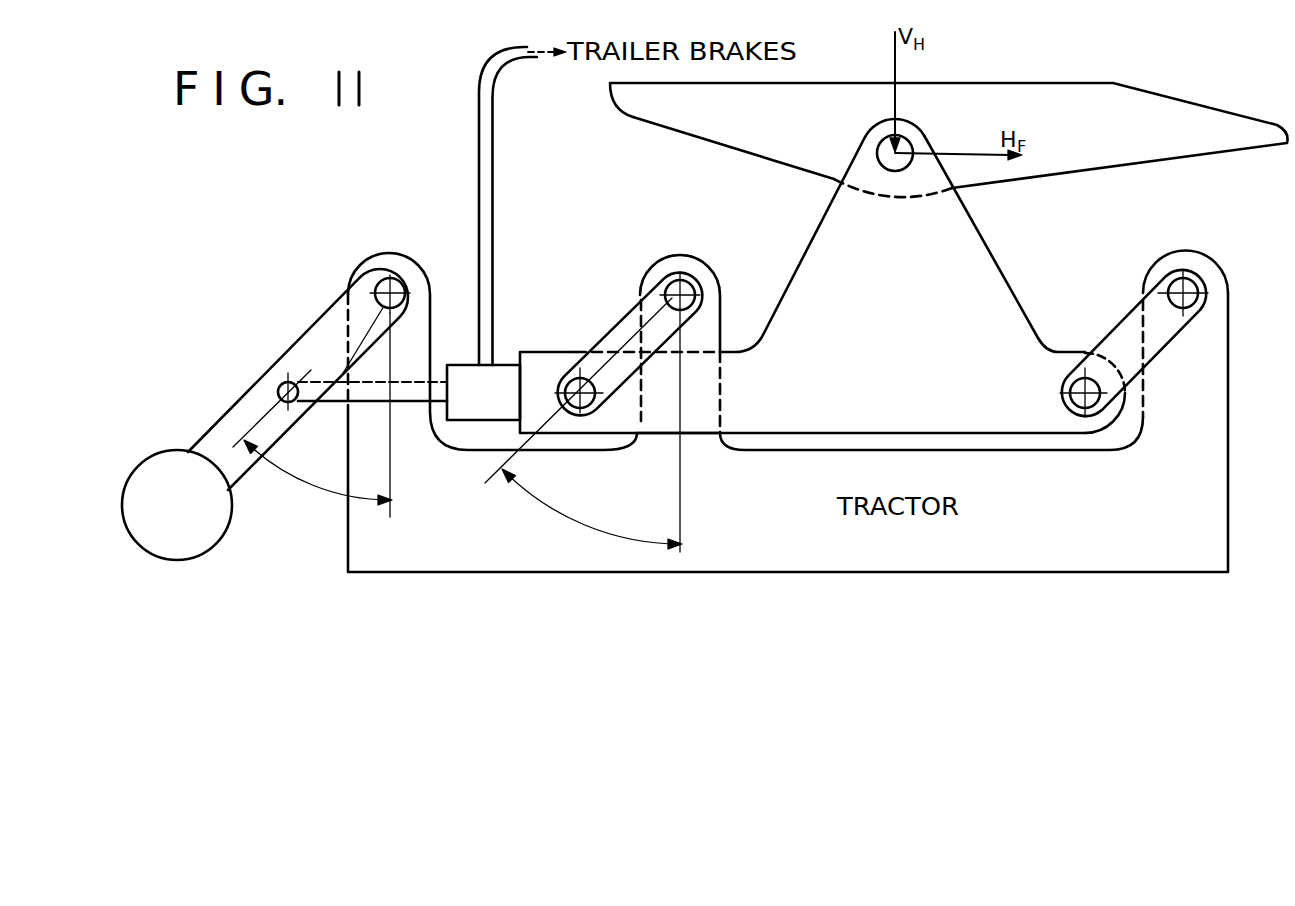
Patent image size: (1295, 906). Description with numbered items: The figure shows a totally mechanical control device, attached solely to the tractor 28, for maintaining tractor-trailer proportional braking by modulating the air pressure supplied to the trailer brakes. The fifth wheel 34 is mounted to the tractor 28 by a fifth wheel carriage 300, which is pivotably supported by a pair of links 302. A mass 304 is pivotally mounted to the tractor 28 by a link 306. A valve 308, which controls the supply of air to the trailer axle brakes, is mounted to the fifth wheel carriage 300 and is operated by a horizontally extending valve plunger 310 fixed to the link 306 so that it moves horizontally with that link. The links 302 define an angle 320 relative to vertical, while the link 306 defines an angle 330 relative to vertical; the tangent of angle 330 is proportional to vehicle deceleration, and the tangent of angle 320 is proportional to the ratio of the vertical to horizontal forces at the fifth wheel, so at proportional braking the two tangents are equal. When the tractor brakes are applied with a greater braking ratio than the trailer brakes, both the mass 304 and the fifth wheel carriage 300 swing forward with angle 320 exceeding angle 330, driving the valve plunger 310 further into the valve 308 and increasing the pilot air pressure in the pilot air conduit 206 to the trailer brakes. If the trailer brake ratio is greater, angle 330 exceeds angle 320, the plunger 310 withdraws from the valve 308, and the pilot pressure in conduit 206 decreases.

The tractor 28 is at (1198, 527).
The fifth wheel 34 is at (1065, 105).
The pilot air conduit 206 is at (487, 148).
The fifth wheel carriage 300 is at (963, 255).
The links 302 is at (607, 340).
The mass 304 is at (170, 463).
The link 306 is at (303, 353).
The valve 308 is at (462, 378).
The valve plunger 310 is at (410, 392).
The angle 320 is at (548, 505).
The angle 330 is at (298, 483).